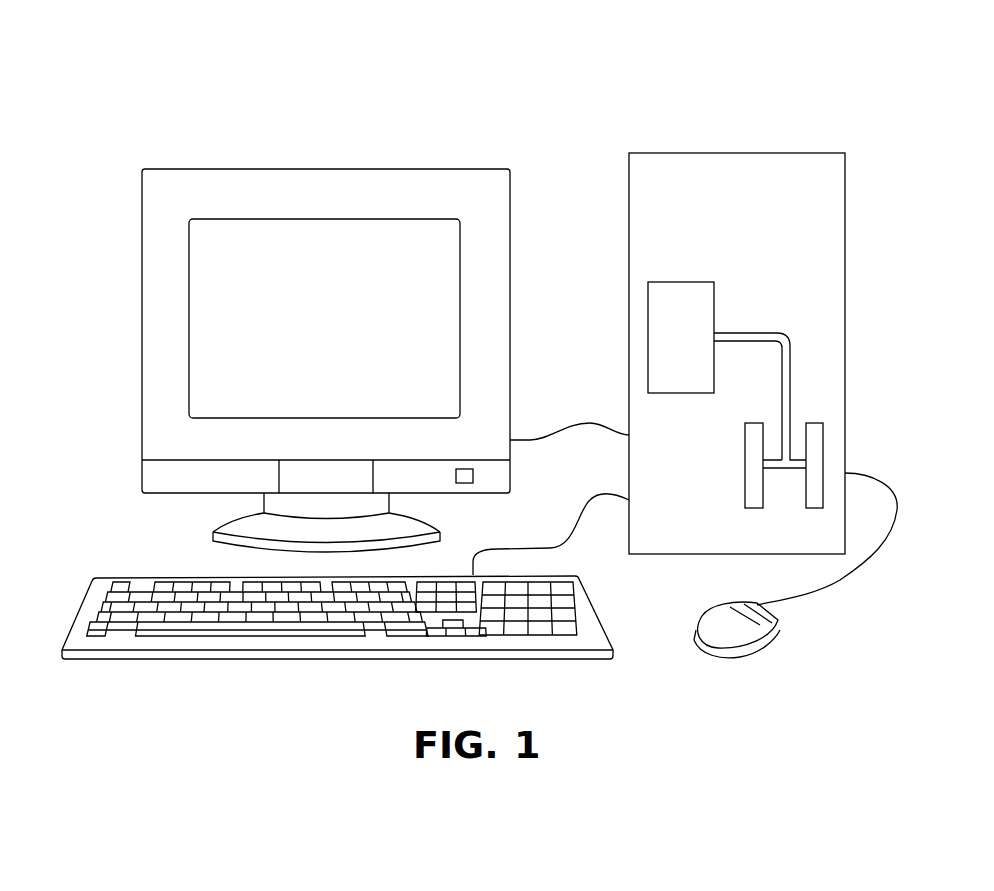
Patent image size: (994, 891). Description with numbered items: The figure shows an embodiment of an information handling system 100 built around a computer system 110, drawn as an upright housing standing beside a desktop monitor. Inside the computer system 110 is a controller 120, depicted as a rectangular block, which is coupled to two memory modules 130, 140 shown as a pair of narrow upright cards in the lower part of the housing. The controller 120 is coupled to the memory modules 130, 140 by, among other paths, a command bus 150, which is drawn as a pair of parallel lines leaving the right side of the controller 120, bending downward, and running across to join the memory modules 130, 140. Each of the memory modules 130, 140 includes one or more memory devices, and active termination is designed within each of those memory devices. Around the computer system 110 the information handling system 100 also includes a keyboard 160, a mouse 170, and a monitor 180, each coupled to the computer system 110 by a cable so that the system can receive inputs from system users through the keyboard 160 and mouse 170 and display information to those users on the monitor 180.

The information handling system 100 is at (766, 102).
The computer system 110 is at (846, 351).
The controller 120 is at (684, 281).
The memory module 130 is at (745, 462).
The memory module 140 is at (810, 508).
The command bus 150 is at (744, 332).
The keyboard 160 is at (78, 614).
The mouse 170 is at (752, 645).
The monitor 180 is at (141, 336).